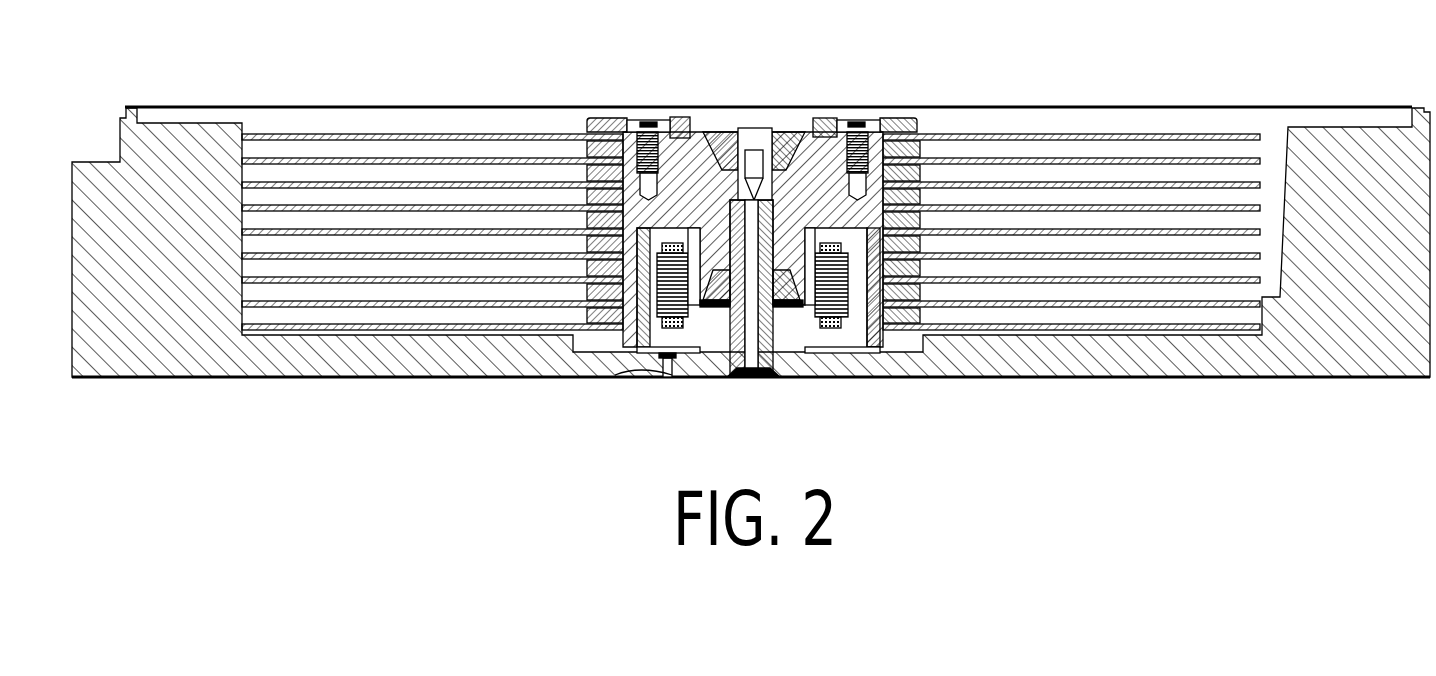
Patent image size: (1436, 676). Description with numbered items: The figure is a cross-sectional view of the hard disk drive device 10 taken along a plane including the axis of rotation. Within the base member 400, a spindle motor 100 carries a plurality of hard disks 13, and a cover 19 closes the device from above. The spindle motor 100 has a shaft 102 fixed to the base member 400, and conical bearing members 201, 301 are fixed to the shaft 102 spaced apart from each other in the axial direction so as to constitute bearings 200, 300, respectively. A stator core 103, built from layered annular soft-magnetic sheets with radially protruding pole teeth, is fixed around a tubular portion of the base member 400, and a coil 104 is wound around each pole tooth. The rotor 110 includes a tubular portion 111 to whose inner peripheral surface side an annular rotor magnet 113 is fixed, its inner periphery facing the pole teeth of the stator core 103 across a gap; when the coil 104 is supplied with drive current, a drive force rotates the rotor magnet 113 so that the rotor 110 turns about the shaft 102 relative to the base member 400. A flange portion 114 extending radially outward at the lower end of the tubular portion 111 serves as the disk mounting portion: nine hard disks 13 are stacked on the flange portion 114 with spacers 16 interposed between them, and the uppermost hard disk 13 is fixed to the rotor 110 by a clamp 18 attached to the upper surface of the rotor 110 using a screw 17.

The hard disk drive device 10 is at (1158, 83).
The hard disks 13 is at (472, 134).
The spacers 16 is at (585, 128).
The screw 17 is at (872, 118).
The clamp 18 is at (678, 118).
The cover 19 is at (355, 106).
The spindle motor 100 is at (812, 122).
The shaft 102 is at (736, 330).
The stator core 103 is at (645, 335).
The coil 104 is at (666, 330).
The rotor 110 is at (694, 124).
The tubular portion 111 is at (610, 128).
The rotor magnet 113 is at (873, 320).
The flange portion 114 is at (925, 330).
The bearing 200 is at (783, 122).
The conical bearing member 201 is at (732, 124).
The bearing 300 is at (786, 265).
The conical bearing member 301 is at (708, 302).
The base member 400 is at (492, 352).